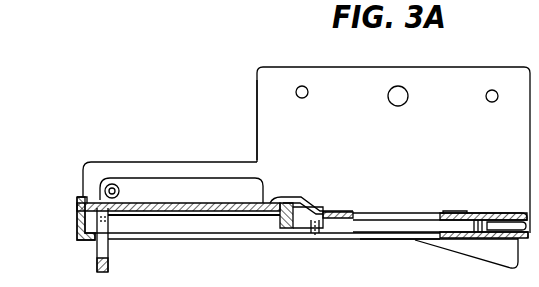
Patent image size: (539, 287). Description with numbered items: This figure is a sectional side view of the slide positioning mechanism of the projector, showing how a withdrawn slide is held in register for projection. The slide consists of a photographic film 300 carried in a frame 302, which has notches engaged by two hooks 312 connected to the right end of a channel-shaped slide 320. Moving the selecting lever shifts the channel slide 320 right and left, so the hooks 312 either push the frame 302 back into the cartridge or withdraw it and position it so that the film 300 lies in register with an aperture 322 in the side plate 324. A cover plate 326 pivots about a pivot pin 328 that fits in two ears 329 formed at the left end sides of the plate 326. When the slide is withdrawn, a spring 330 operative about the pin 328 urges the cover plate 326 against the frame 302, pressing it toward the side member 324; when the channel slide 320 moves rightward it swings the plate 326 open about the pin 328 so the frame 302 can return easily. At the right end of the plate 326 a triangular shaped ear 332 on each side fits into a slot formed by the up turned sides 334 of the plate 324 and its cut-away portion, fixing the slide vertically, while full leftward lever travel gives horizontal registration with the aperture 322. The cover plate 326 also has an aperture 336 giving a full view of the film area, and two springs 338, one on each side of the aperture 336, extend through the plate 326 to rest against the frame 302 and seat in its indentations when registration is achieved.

The film 300 is at (387, 222).
The frame 302 is at (303, 228).
The hooks 312 is at (318, 237).
The channel-shaped slide 320 is at (195, 217).
The aperture 322 is at (383, 241).
The side plate 324 is at (252, 239).
The cover plate 326 is at (492, 220).
The pivot pin 328 is at (106, 198).
The ears 329 is at (205, 187).
The spring 330 is at (140, 202).
The triangular shaped ear 332 is at (476, 258).
The up turned sides 334 is at (258, 103).
The aperture 336 is at (417, 218).
The springs 338 is at (313, 203).